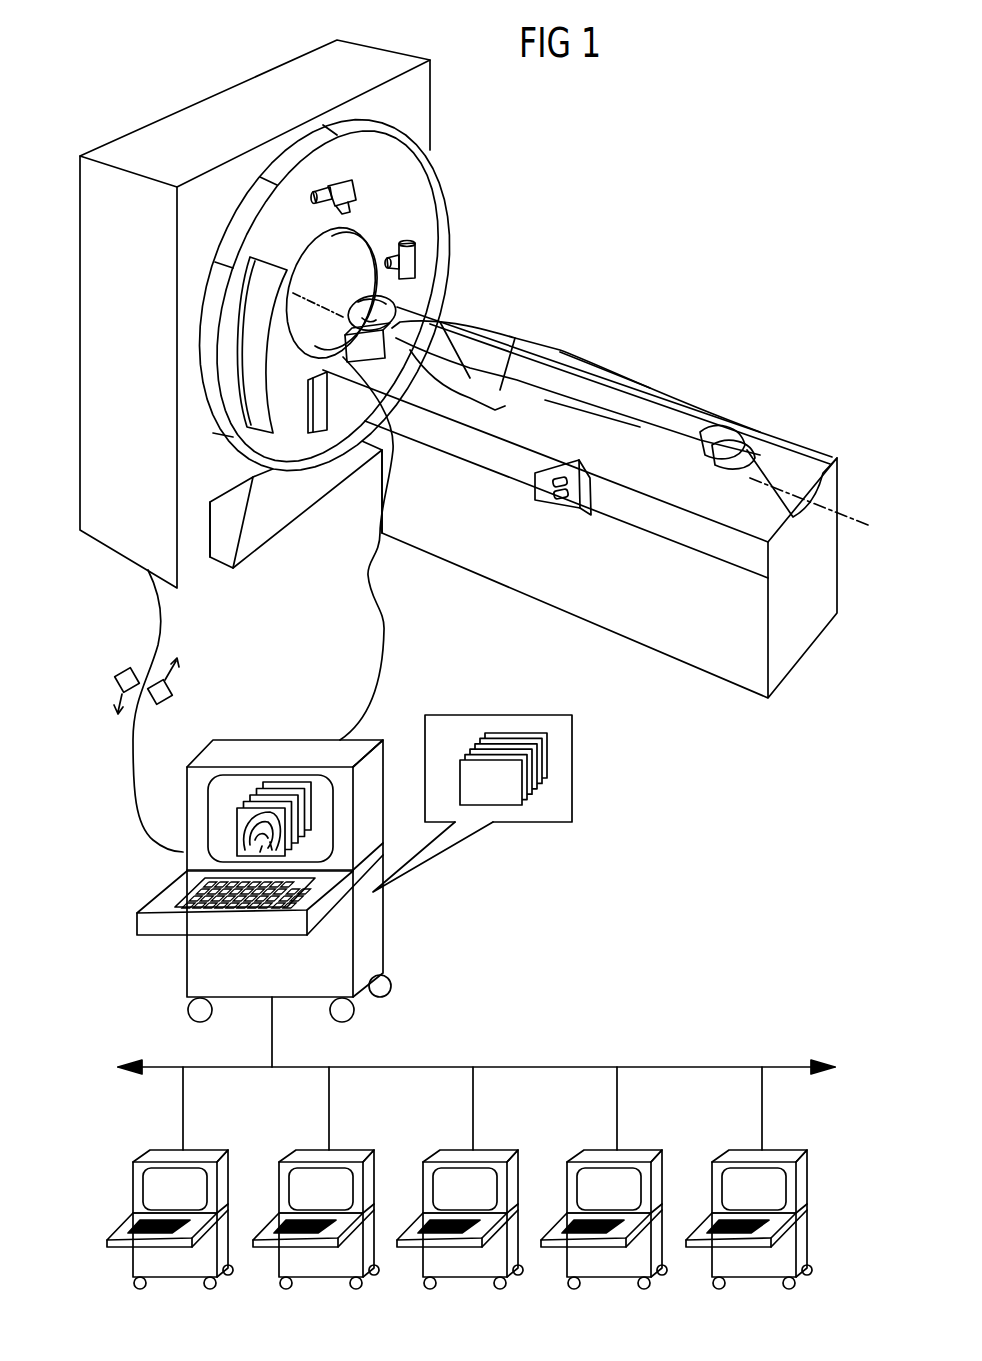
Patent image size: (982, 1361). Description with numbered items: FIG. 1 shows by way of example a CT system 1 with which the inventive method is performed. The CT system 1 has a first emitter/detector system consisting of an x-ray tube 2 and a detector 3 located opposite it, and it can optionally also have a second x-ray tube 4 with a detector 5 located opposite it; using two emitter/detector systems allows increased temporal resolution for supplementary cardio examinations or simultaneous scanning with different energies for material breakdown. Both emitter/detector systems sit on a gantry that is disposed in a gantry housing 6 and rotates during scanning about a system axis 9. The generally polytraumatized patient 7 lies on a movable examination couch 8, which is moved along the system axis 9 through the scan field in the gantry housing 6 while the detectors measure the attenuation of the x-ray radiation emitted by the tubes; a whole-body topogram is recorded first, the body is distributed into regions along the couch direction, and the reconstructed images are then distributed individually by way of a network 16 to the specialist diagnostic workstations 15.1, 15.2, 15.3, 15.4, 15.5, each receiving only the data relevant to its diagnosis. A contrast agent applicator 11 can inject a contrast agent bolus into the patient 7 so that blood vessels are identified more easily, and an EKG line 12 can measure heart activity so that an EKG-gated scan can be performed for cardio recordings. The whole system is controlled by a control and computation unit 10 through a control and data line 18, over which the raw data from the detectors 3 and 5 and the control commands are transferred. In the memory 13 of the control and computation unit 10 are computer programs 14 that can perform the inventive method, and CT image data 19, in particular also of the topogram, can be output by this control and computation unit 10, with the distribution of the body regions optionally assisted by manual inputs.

The CT system 1 is at (617, 242).
The first x-ray tube 2 is at (357, 190).
The first detector 3 is at (323, 415).
The second x-ray tube 4 is at (413, 255).
The second detector 5 is at (265, 407).
The gantry housing 6 is at (108, 522).
The patient 7 is at (470, 343).
The examination couch 8 is at (723, 653).
The system axis 9 is at (858, 518).
The control and computation unit 10 is at (377, 935).
The contrast agent applicator 11 is at (567, 515).
The EKG line 12 is at (383, 629).
The memory 13 is at (572, 762).
The computer program 14 is at (507, 805).
The diagnostic workstation 15.1 is at (160, 1148).
The diagnostic workstation 15.2 is at (316, 1178).
The diagnostic workstation 15.3 is at (460, 1178).
The diagnostic workstation 15.4 is at (604, 1178).
The diagnostic workstation 15.5 is at (749, 1178).
The network 16 is at (650, 1065).
The control and data line 18 is at (132, 750).
The CT image data 19 is at (283, 778).